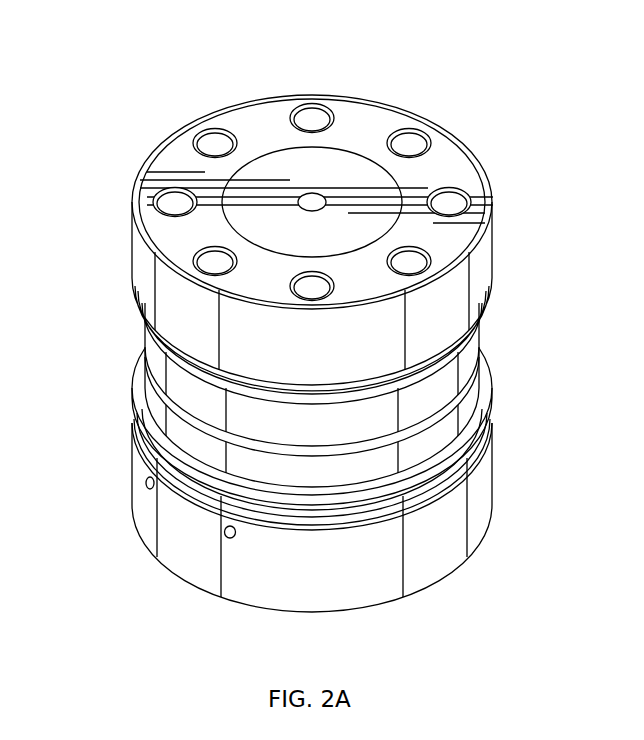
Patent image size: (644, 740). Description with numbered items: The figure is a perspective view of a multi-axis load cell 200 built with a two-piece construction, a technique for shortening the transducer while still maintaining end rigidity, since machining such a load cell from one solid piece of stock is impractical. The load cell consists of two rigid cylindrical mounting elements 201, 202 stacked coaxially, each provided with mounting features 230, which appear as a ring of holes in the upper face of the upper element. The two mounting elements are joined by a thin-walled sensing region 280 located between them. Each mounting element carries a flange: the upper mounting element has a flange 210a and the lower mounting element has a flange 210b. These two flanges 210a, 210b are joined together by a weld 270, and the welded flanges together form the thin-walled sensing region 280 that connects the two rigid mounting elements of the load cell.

The multi-axis load cell 200 is at (152, 86).
The rigid cylindrical mounting element 201 is at (483, 268).
The rigid cylindrical mounting element 202 is at (483, 496).
The mounting features 230 is at (414, 140).
The thin-walled sensing region 280 is at (500, 355).
The flange 210a is at (157, 372).
The flange 210b is at (157, 417).
The weld 270 is at (465, 398).